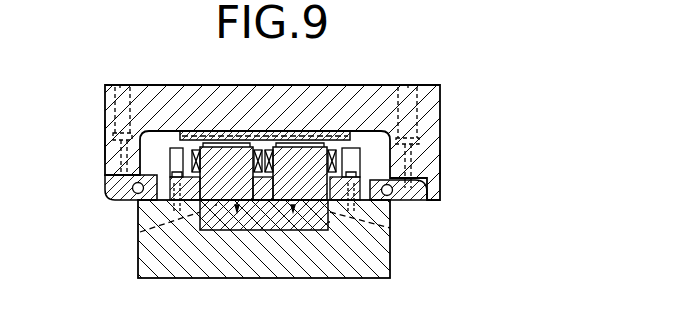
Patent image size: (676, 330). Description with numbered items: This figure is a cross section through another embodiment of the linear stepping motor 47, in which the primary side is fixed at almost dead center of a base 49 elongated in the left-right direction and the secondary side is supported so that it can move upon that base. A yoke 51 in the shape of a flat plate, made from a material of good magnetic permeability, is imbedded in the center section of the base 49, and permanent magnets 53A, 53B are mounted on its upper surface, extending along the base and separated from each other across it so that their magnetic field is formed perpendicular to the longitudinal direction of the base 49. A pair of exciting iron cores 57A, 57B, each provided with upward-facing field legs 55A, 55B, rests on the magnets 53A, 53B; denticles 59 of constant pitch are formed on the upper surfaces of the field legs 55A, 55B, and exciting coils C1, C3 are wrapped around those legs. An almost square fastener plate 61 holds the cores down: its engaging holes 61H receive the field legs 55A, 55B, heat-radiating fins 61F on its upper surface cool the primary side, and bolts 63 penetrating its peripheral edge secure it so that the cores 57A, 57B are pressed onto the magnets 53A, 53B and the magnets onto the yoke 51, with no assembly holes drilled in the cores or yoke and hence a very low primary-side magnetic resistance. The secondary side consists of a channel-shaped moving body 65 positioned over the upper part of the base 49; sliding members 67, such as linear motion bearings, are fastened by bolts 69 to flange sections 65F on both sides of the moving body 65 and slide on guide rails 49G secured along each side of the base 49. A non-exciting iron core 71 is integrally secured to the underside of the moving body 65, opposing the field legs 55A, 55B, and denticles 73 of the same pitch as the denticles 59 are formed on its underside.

The linear stepping motor 47 is at (452, 86).
The base 49 is at (388, 258).
The guide rails 49G is at (142, 205).
The yoke 51 is at (390, 275).
The permanent magnet 53A is at (215, 207).
The permanent magnet 53B is at (330, 223).
The field legs 55A is at (217, 160).
The field legs 55B is at (325, 150).
The exciting iron core 57A is at (247, 212).
The exciting iron core 57B is at (293, 212).
The denticles 59 is at (293, 131).
The fastener plate 61 is at (187, 212).
The heat-radiating fins 61F is at (175, 160).
The engaging holes 61H is at (190, 212).
The bolts 63 is at (175, 217).
The moving body 65 is at (104, 99).
The flange sections 65F is at (105, 125).
The sliding members 67 is at (105, 183).
The bolts 69 is at (105, 140).
The non-exciting iron core 71 is at (302, 160).
The denticles 73 is at (223, 132).
The exciting coil C1 is at (180, 153).
The exciting coil C3 is at (365, 130).